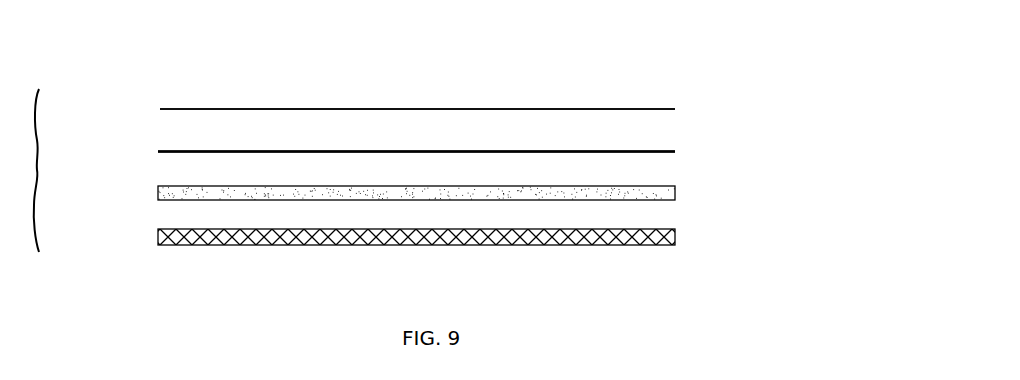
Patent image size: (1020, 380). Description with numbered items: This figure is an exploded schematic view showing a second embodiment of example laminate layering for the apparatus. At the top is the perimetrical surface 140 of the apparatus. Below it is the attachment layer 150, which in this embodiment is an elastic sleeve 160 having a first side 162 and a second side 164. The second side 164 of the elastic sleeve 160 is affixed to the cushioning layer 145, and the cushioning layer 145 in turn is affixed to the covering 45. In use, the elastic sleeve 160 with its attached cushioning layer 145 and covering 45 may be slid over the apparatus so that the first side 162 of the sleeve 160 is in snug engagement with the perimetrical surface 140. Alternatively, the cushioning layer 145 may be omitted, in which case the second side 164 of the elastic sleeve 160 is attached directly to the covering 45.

The perimetrical surface 140 is at (650, 109).
The attachment layer 150 is at (682, 154).
The first side 162 is at (197, 150).
The elastic sleeve 160 is at (158, 151).
The second side 164 is at (175, 153).
The cushioning layer 145 is at (650, 193).
The covering 45 is at (642, 243).